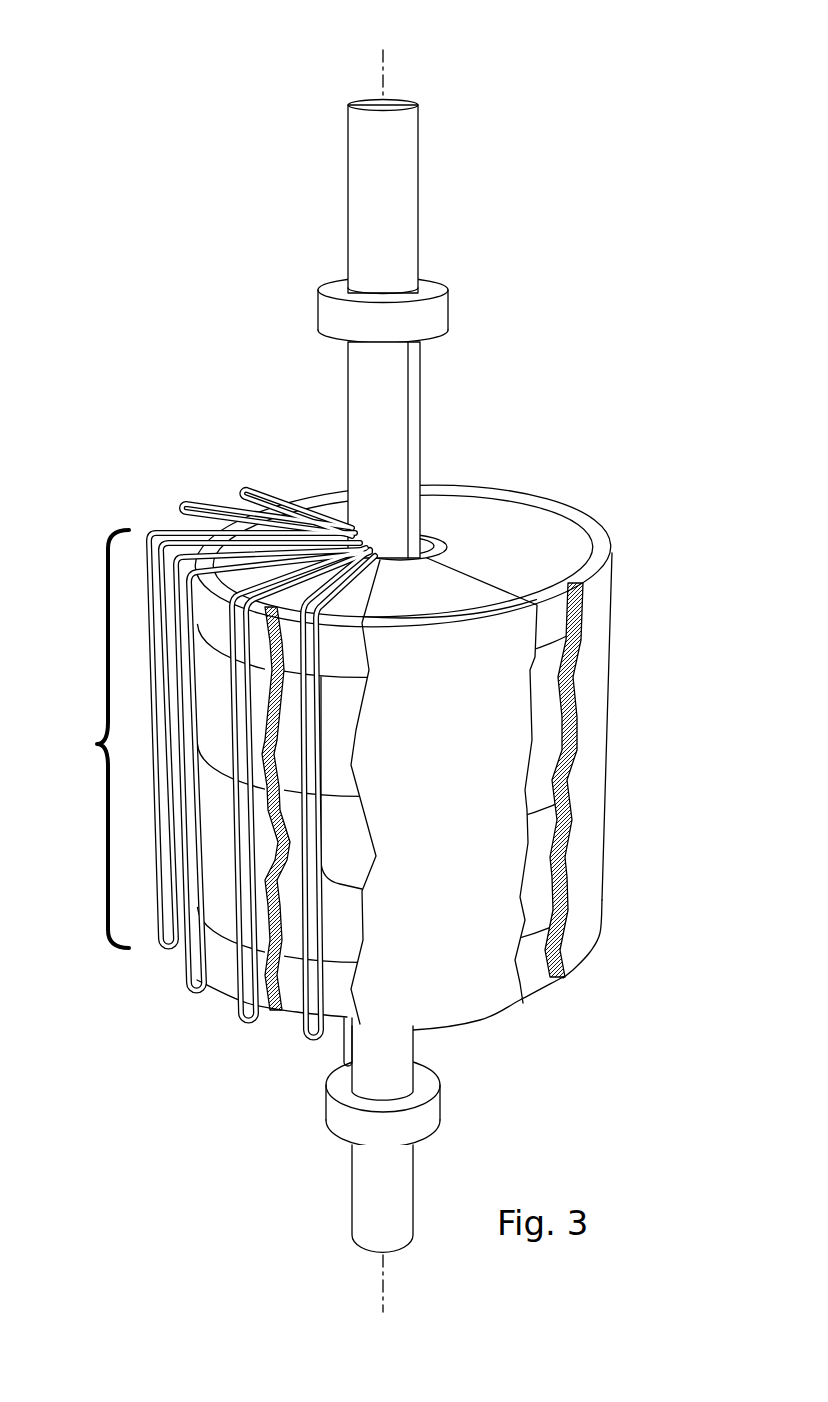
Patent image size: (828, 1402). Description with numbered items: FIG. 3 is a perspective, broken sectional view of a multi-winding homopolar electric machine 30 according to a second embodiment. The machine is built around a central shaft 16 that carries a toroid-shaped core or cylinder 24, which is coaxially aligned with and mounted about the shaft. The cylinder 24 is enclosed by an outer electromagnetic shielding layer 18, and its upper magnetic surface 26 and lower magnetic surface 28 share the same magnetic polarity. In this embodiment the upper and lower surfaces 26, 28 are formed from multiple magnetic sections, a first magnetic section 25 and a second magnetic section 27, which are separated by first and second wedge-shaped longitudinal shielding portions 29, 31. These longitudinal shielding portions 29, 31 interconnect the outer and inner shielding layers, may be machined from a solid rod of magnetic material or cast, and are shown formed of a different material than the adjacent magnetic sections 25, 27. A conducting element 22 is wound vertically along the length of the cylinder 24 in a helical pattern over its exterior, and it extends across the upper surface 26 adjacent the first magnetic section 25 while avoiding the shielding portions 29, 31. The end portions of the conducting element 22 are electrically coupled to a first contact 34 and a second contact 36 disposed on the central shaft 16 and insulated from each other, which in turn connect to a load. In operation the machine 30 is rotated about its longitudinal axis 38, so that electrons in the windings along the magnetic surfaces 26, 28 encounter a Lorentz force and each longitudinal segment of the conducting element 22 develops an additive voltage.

The central shaft 16 is at (402, 216).
The first electromagnetic shielding layer 18 is at (600, 605).
The conducting element 22 is at (417, 383).
The cylinder 24 is at (216, 764).
The first magnetic section 25 is at (340, 653).
The upper magnetic surface 26 is at (423, 514).
The second magnetic section 27 is at (574, 542).
The lower magnetic surface 28 is at (547, 988).
The first wedge-shaped longitudinal shielding portion 29 is at (320, 500).
The multi-winding homopolar electric machine 30 is at (660, 226).
The second wedge-shaped longitudinal shielding portion 31 is at (444, 602).
The first contact 34 is at (436, 317).
The second contact 36 is at (352, 1125).
The longitudinal axis 38 is at (383, 90).